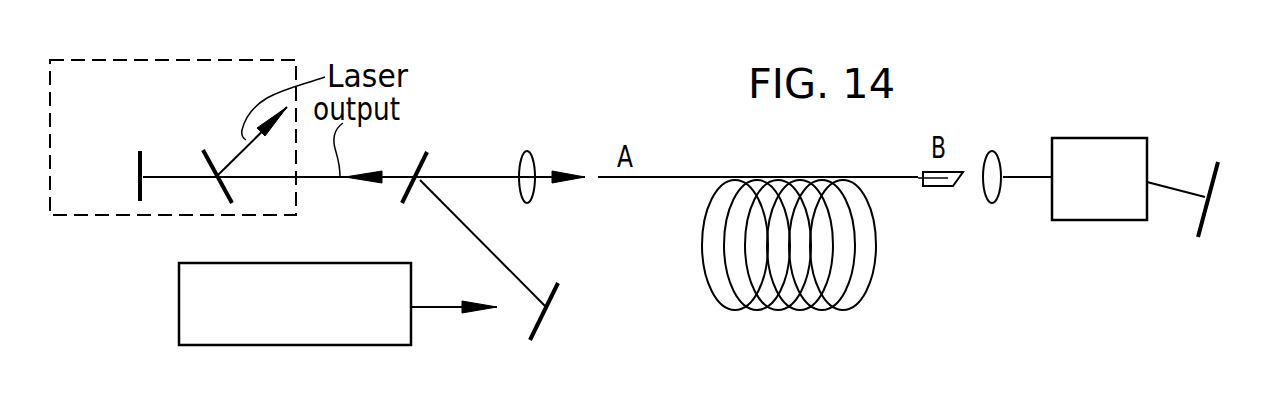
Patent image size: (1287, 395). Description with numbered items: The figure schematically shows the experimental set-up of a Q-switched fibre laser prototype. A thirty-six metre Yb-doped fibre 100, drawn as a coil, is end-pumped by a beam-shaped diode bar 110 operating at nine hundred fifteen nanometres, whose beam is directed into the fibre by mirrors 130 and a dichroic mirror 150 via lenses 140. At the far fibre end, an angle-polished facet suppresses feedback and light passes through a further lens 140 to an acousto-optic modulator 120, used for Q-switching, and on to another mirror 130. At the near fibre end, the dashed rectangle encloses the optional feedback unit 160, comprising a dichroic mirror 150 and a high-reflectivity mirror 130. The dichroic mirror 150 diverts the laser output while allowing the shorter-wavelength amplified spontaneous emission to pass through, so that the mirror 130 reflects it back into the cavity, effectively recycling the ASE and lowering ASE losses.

The Yb-doped fibre 100 is at (796, 311).
The beam-shaped diode bar 110 is at (315, 263).
The acousto-optic modulator 120 is at (1107, 221).
The mirror 130 is at (137, 188).
The lens 140 is at (533, 156).
The dichroic mirror 150 is at (222, 198).
The feedback unit 160 is at (203, 59).